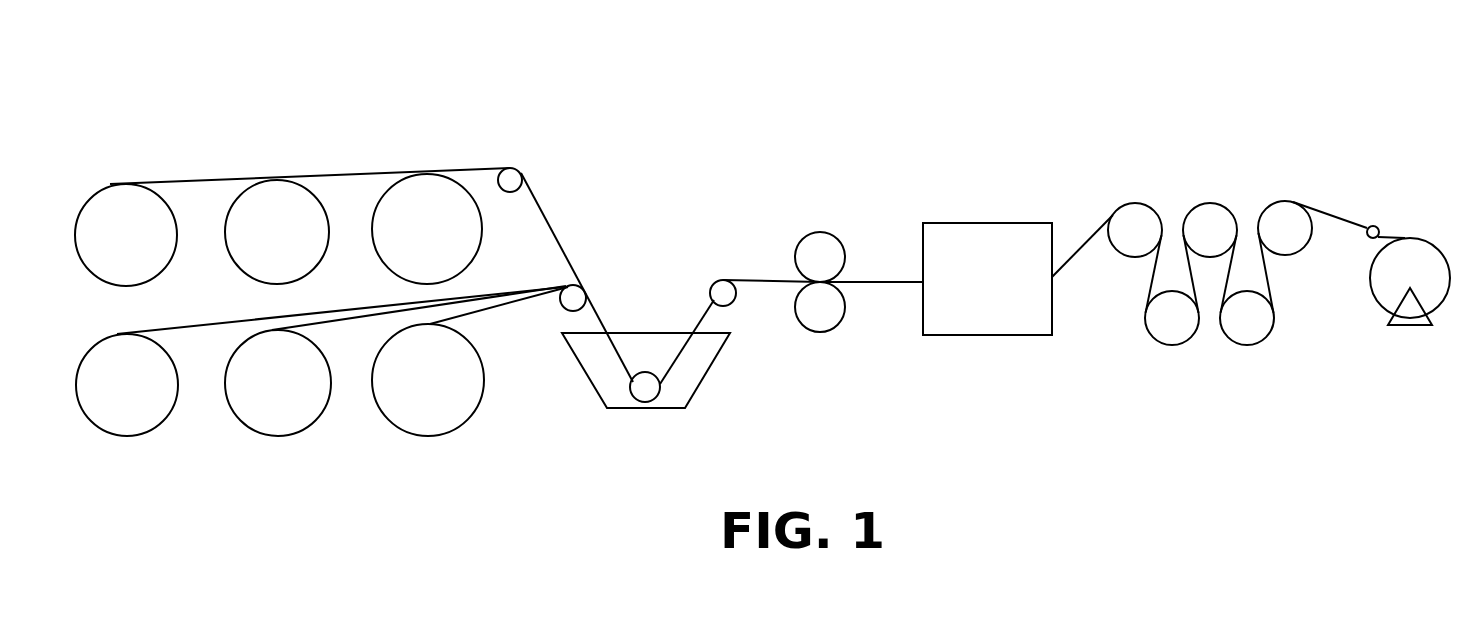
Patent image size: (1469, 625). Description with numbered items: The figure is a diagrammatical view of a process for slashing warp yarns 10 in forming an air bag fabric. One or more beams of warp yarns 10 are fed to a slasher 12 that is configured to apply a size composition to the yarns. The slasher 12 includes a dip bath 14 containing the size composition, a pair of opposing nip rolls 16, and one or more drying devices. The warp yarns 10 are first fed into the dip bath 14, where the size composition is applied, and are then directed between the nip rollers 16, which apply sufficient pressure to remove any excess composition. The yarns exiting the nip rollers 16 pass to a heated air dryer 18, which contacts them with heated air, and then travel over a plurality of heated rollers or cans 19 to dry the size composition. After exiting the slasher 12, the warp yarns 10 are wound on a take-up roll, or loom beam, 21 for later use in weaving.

The warp yarns 10 is at (277, 192).
The slasher 12 is at (694, 102).
The dip bath 14 is at (705, 378).
The nip rollers 16 is at (825, 322).
The heated air dryer 18 is at (980, 325).
The heated rollers or cans 19 is at (1138, 217).
The take-up roll 21 is at (1422, 250).